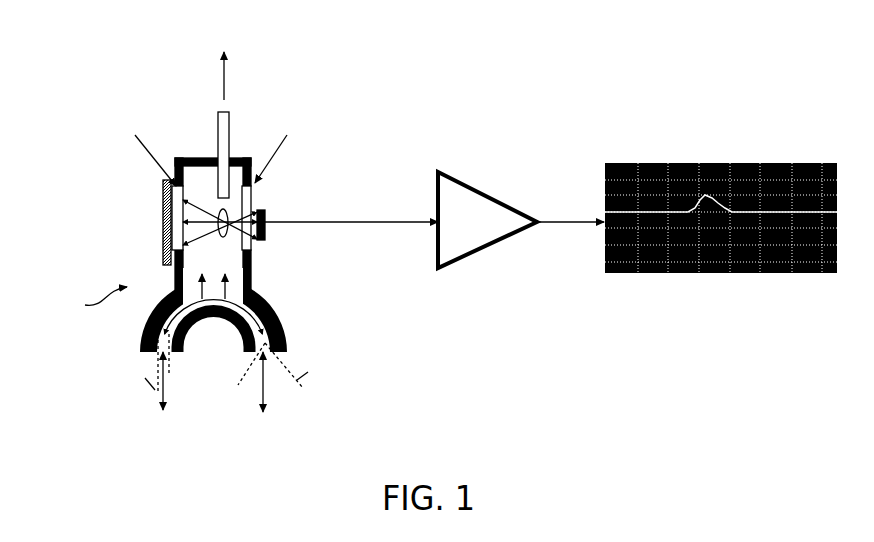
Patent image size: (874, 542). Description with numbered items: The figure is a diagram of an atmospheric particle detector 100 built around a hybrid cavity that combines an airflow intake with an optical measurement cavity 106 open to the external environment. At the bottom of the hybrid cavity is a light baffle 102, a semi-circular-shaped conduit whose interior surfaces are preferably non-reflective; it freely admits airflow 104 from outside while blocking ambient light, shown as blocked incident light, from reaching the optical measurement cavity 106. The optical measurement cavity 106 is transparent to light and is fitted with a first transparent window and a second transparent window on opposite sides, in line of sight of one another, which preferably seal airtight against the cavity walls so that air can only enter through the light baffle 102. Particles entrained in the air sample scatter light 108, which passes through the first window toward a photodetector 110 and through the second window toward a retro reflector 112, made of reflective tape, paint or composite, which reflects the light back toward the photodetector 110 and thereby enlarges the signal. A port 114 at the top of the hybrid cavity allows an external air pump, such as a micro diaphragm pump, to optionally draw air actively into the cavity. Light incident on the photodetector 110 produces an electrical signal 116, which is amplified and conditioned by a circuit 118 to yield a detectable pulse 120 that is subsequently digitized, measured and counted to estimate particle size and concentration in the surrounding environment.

The atmospheric particle detector 100 is at (374, 148).
The light baffle 102 is at (288, 332).
The airflow 104 is at (223, 355).
The optical measurement cavity 106 is at (247, 157).
The scattered light 108 is at (208, 205).
The photodetector 110 is at (277, 202).
The retro reflector 112 is at (148, 247).
The port 114 is at (271, 114).
The electrical signal 116 is at (342, 230).
The circuit 118 is at (521, 244).
The detectable pulse 120 is at (721, 208).